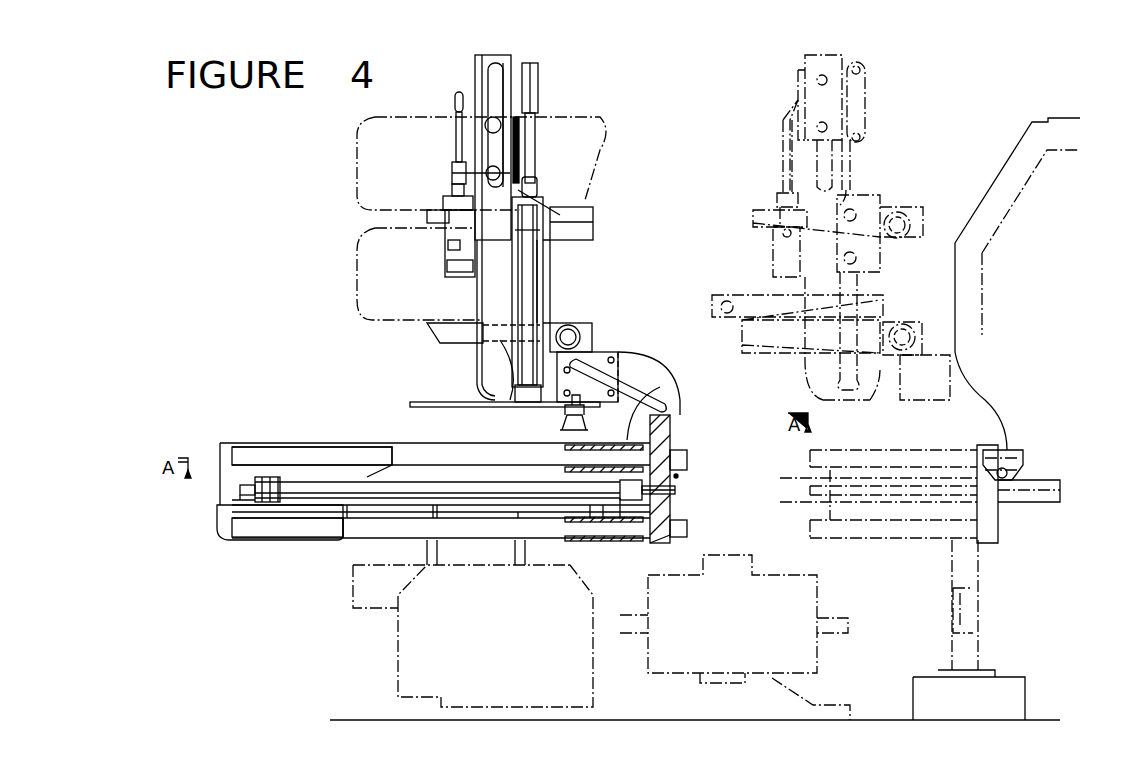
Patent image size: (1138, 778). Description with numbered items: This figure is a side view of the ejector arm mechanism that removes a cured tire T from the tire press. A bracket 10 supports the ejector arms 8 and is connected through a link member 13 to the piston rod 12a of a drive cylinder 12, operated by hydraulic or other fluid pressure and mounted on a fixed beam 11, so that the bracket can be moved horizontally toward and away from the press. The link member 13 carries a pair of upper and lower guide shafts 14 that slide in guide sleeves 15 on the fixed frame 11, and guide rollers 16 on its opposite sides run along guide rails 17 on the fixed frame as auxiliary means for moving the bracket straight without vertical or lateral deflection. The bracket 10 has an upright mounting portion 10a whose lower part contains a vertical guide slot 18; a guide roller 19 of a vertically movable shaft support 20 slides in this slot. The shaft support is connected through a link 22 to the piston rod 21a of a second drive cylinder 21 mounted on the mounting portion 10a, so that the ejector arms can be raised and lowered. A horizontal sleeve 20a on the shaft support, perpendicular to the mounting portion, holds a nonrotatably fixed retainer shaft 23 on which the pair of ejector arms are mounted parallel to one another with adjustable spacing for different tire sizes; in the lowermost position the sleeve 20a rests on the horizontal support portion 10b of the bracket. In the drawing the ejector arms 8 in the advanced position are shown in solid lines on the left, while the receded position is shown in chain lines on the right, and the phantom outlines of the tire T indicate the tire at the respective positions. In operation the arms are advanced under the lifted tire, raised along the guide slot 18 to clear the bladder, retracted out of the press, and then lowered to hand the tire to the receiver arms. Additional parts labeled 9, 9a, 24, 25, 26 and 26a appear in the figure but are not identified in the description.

The ejector arms 8 is at (595, 220).
The column 9 is at (476, 110).
The guide member 9a is at (540, 120).
The bracket 10 is at (500, 355).
The upright mounting portion 10a is at (525, 180).
The horizontal support portion 10b is at (558, 392).
The fixed beam 11 is at (322, 545).
The drive cylinder 12 is at (397, 505).
The piston rod 12a is at (675, 490).
The link member 13 is at (672, 428).
The guide shafts 14 is at (480, 460).
The guide sleeves 15 is at (640, 402).
The guide rollers 16 is at (1010, 472).
The guide rails 17 is at (830, 470).
The vertical guide slot 18 is at (512, 300).
The guide roller 19 is at (478, 360).
The shaft support 20 is at (545, 305).
The horizontal sleeve 20a is at (915, 318).
The drive cylinder 21 is at (545, 290).
The piston rod 21a is at (575, 212).
The link 22 is at (540, 190).
The retainer shaft 23 is at (580, 338).
The rod 24 is at (532, 78).
The pin 25 is at (493, 125).
The stop block 26 is at (445, 205).
The stop rod 26a is at (452, 178).
The cured tire T is at (357, 157).